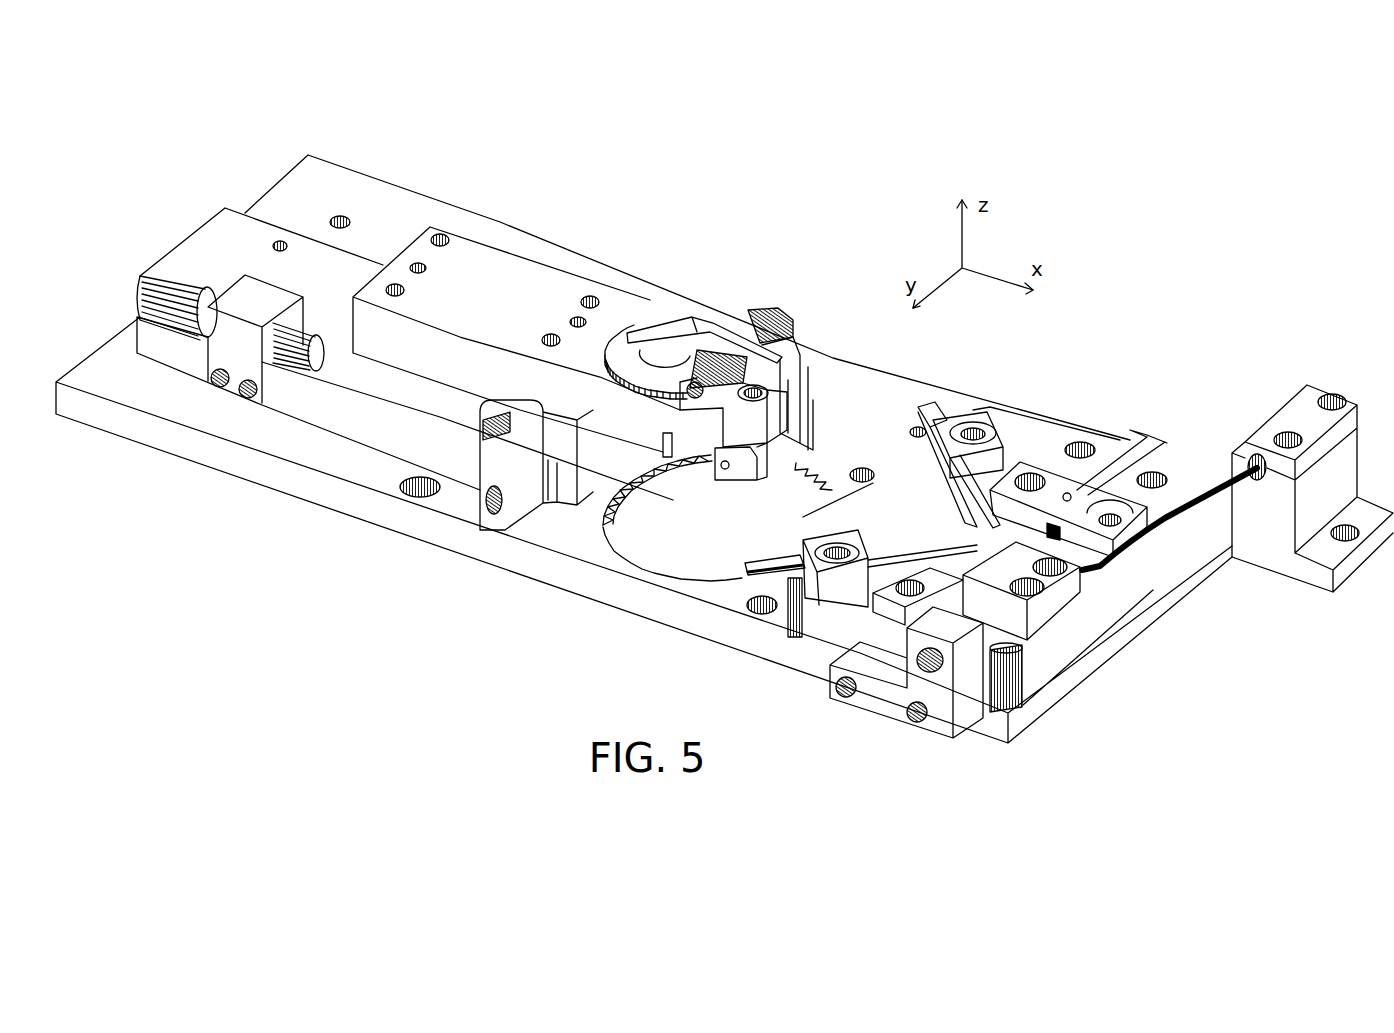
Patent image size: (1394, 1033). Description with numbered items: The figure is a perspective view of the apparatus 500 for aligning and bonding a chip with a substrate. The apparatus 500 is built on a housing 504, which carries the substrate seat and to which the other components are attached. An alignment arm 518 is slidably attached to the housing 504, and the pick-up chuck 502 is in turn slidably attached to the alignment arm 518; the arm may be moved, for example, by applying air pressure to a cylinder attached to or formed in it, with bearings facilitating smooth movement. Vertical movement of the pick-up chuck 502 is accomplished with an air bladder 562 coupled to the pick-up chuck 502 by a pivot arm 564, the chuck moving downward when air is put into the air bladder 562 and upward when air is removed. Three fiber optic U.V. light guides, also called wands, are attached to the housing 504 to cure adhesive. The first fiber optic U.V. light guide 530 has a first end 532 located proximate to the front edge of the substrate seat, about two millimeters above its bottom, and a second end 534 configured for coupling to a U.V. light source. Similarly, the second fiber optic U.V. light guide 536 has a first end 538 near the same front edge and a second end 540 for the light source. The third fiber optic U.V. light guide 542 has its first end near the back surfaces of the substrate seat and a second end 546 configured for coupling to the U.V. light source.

The apparatus 500 is at (427, 622).
The pick-up chuck 502 is at (730, 483).
The housing 504 is at (262, 470).
The alignment arm 518 is at (595, 410).
The first fiber optic U.V. light guide 530 is at (940, 410).
The first end of the first fiber optic U.V. light guide 532 is at (997, 493).
The second end of the first fiber optic U.V. light guide 534 is at (928, 403).
The second fiber optic U.V. light guide 536 is at (872, 593).
The first end of the second fiber optic U.V. light guide 538 is at (1003, 535).
The second end of the second fiber optic U.V. light guide 540 is at (746, 567).
The third fiber optic U.V. light guide 542 is at (1173, 533).
The second end of the third fiber optic U.V. light guide 546 is at (1245, 458).
The air bladder 562 is at (647, 375).
The pivot arm 564 is at (768, 353).